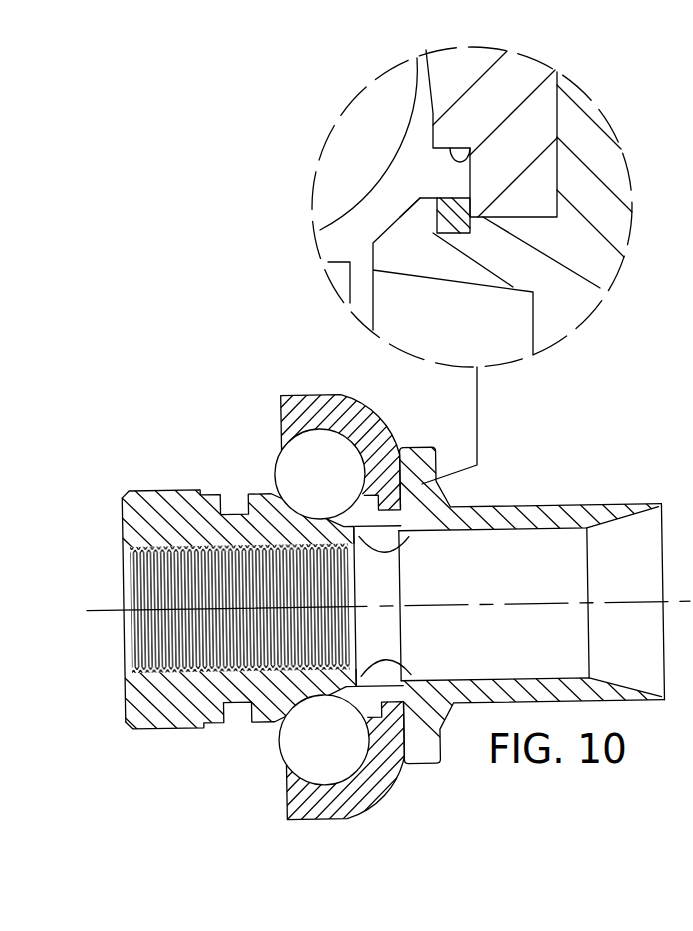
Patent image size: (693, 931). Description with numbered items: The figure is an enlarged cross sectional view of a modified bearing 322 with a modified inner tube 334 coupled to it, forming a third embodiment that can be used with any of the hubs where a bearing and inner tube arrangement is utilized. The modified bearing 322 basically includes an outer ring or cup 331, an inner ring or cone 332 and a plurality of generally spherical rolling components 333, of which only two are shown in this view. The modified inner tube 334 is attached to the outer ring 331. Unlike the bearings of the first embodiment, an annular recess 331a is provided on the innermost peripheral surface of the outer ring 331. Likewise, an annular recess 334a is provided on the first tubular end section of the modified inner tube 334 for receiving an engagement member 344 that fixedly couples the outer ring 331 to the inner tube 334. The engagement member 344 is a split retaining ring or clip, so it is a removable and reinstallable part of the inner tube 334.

The modified bearing 322 is at (268, 362).
The outer ring 331 is at (320, 396).
The annular recess 331a is at (472, 163).
The inner ring 332 is at (155, 488).
The rolling components 333 is at (277, 458).
The modified inner tube 334 is at (590, 500).
The annular recess 334a is at (448, 230).
The engagement member 344 is at (452, 198).